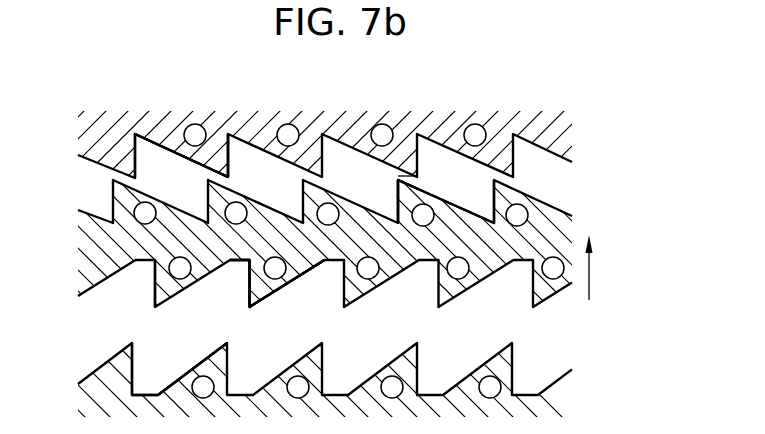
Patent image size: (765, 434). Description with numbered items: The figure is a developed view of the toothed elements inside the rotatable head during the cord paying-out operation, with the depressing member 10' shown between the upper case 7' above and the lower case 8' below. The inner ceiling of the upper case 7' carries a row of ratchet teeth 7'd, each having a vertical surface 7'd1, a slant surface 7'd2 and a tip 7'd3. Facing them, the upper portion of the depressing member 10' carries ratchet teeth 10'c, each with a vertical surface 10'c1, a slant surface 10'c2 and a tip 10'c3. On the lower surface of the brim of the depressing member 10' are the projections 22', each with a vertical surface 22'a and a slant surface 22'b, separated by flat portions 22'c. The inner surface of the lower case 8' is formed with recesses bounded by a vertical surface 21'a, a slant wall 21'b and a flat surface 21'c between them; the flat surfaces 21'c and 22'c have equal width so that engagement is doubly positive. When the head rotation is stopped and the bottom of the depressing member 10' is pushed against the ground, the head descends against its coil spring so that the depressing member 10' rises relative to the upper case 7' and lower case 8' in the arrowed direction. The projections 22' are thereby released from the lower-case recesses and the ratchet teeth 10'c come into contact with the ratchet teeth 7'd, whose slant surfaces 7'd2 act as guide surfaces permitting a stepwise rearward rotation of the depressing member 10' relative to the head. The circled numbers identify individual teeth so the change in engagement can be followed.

The upper case 7' is at (320, 136).
The ratchet tooth 7'd is at (210, 136).
The vertical surface 7'd1 is at (257, 125).
The slant surface 7'd2 is at (176, 125).
The tip 7'd3 is at (258, 186).
The depressing member 10' is at (357, 212).
The ratchet tooth 10'c is at (411, 147).
The vertical surface 10'c1 is at (363, 196).
The slant surface 10'c2 is at (442, 132).
The tip 10'c3 is at (372, 124).
The projection 22' is at (220, 306).
The vertical surface 22'a is at (175, 306).
The slant surface 22'b is at (295, 286).
The flat portion 22'c is at (218, 291).
The lower case 8' is at (312, 370).
The vertical surface 21'a is at (111, 357).
The slant wall 21'b is at (215, 369).
The flat surface 21'c is at (151, 375).